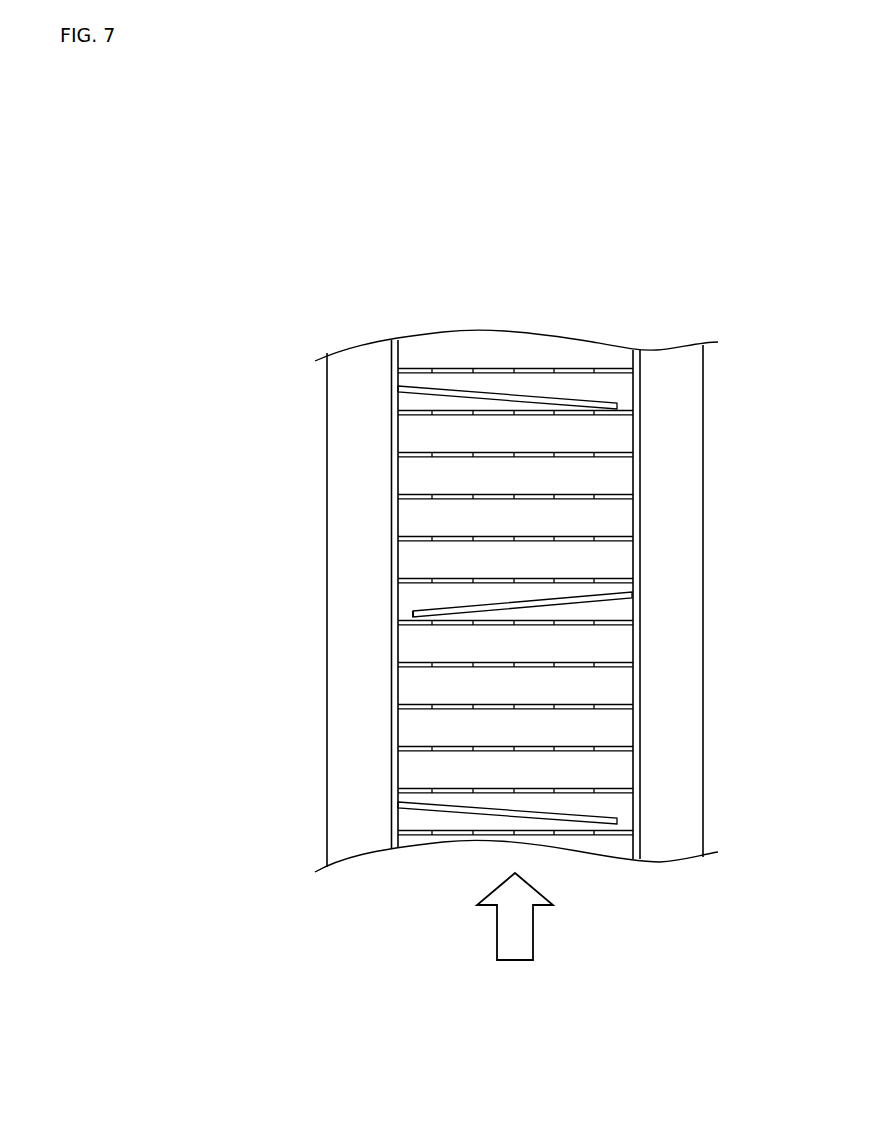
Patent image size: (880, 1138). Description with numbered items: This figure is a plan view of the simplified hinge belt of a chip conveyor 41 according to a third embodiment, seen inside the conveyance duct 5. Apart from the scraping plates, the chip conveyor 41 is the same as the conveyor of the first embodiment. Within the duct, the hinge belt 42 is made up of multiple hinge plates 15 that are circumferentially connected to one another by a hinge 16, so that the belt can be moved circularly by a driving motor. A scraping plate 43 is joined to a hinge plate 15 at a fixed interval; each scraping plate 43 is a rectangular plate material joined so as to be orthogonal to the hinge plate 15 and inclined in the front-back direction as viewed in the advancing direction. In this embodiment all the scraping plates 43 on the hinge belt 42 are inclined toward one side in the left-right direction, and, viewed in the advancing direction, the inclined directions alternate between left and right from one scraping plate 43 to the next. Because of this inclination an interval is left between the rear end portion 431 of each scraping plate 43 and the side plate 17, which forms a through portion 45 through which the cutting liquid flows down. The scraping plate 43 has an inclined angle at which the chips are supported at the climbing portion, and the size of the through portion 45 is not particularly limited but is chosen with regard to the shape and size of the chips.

The conveyance duct 5 is at (705, 782).
The chip conveyor 41 is at (507, 546).
The hinge belt 42 is at (642, 516).
The side plate 17 is at (395, 736).
The hinge 16 is at (462, 457).
The hinge plate 15 is at (425, 437).
The scraping plate 43 is at (517, 605).
The rear end portion 431 is at (412, 615).
The through portion 45 is at (413, 594).